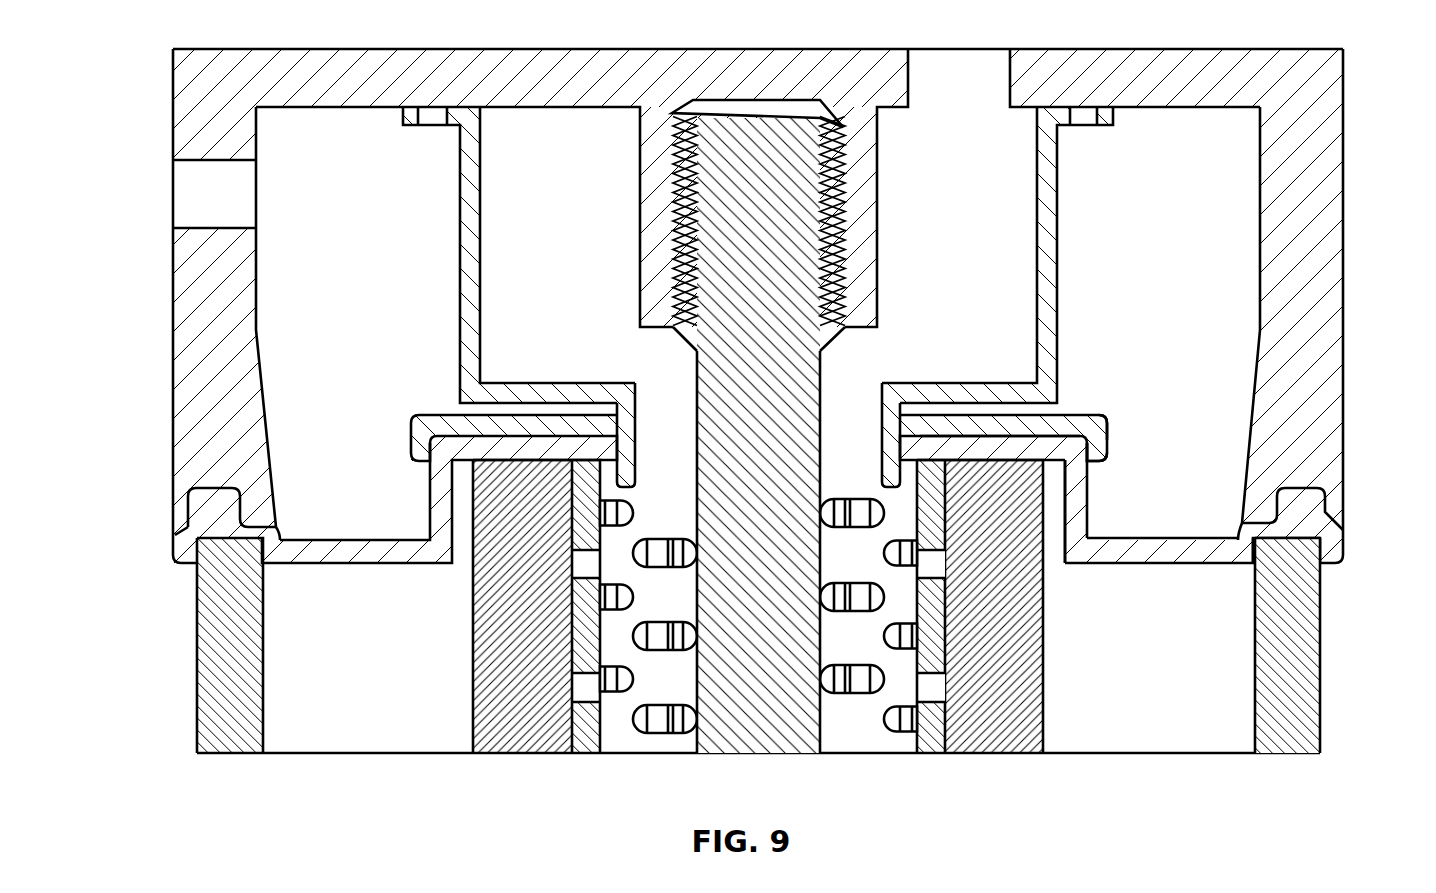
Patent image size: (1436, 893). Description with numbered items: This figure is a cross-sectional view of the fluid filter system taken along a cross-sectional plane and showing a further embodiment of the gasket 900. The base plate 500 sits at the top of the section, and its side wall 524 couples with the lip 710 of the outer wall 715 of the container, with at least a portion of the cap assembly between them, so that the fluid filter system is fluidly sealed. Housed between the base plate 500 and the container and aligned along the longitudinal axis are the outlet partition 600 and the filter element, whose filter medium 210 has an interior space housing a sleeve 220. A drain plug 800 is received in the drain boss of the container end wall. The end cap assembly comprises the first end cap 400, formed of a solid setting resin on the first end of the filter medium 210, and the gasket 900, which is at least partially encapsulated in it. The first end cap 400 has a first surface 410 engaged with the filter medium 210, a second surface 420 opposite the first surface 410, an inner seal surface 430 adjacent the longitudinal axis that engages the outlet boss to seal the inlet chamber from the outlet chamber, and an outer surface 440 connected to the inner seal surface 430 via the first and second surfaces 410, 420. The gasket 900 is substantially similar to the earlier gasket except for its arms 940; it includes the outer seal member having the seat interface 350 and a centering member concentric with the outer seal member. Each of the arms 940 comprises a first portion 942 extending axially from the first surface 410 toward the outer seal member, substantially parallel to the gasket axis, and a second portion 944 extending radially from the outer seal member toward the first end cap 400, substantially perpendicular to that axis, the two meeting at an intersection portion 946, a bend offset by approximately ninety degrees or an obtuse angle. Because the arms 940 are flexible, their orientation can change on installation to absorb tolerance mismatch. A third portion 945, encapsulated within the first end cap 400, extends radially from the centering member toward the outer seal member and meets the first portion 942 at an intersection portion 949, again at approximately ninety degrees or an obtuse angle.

The base plate 500 is at (1350, 148).
The side wall 524 is at (1326, 243).
The seat interface 350 is at (1330, 498).
The gasket 900 is at (156, 548).
The outlet partition 600 is at (488, 214).
The second surface 420 is at (1037, 403).
The inner seal surface 430 is at (902, 422).
The first end cap 400 is at (1098, 410).
The arms 940 is at (1062, 428).
The third portion 945 is at (1023, 432).
The outer surface 440 is at (1108, 420).
The intersection portion 949 is at (1100, 455).
The first surface 410 is at (1093, 463).
The first portion 942 is at (1062, 500).
The intersection portion 946 is at (1052, 505).
The second portion 944 is at (1185, 563).
The outer wall 715 is at (1304, 713).
The lip 710 is at (1286, 546).
The filter medium 210 is at (516, 740).
The sleeve 220 is at (580, 740).
The drain plug 800 is at (746, 736).